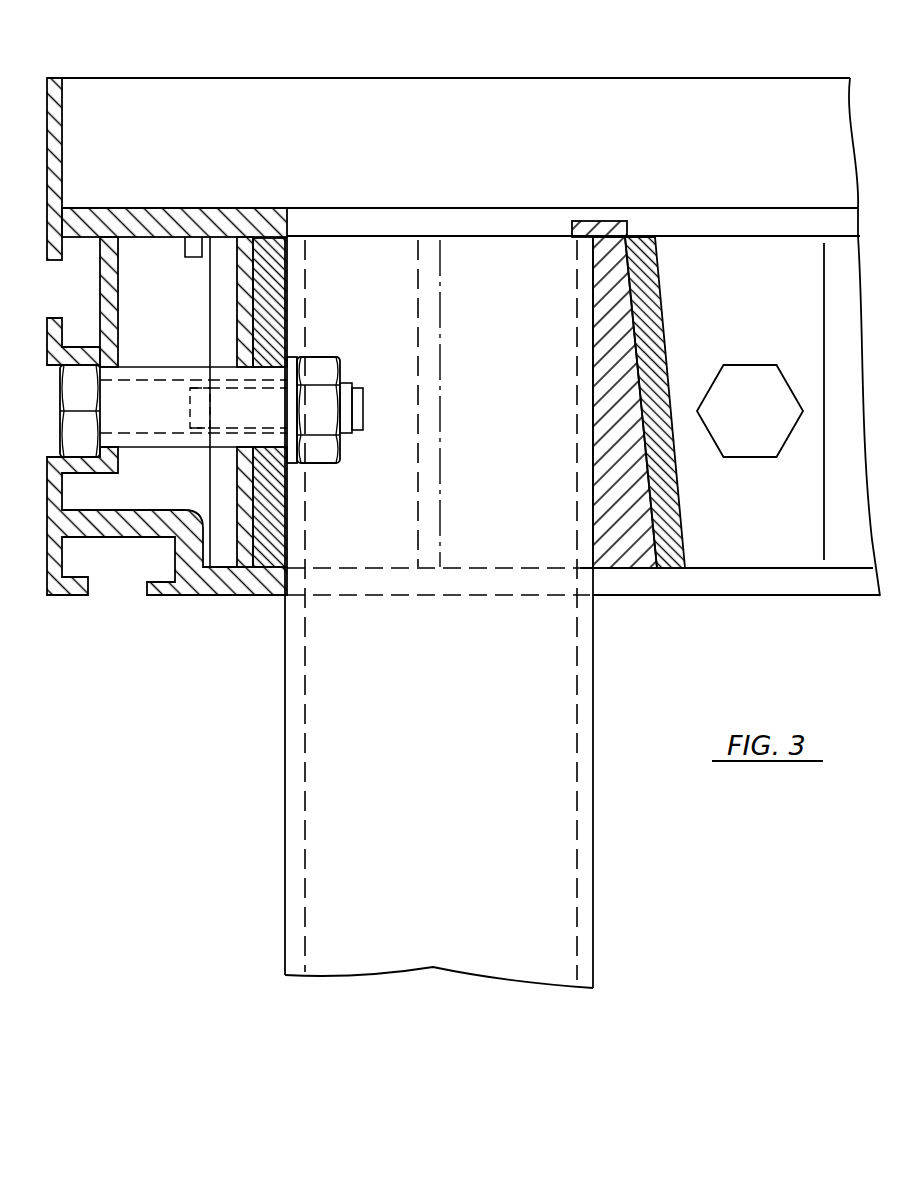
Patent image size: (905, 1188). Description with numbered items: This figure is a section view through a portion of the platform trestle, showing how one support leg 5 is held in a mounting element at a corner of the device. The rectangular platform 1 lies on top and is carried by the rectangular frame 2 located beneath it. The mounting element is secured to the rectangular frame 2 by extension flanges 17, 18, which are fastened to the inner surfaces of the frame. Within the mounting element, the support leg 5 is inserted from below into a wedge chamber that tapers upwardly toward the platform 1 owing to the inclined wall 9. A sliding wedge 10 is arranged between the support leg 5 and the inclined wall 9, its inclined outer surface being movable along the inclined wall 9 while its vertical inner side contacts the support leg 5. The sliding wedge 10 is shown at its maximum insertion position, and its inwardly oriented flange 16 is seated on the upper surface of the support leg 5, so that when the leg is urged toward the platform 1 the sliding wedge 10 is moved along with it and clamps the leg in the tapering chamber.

The rectangular platform 1 is at (277, 78).
The rectangular frame 2 is at (163, 599).
The support leg 5 is at (320, 832).
The inclined wall 9 is at (664, 236).
The sliding wedge 10 is at (612, 270).
The inwardly oriented flange 16 is at (575, 221).
The extension flange 17 is at (757, 545).
The extension flange 18 is at (280, 240).